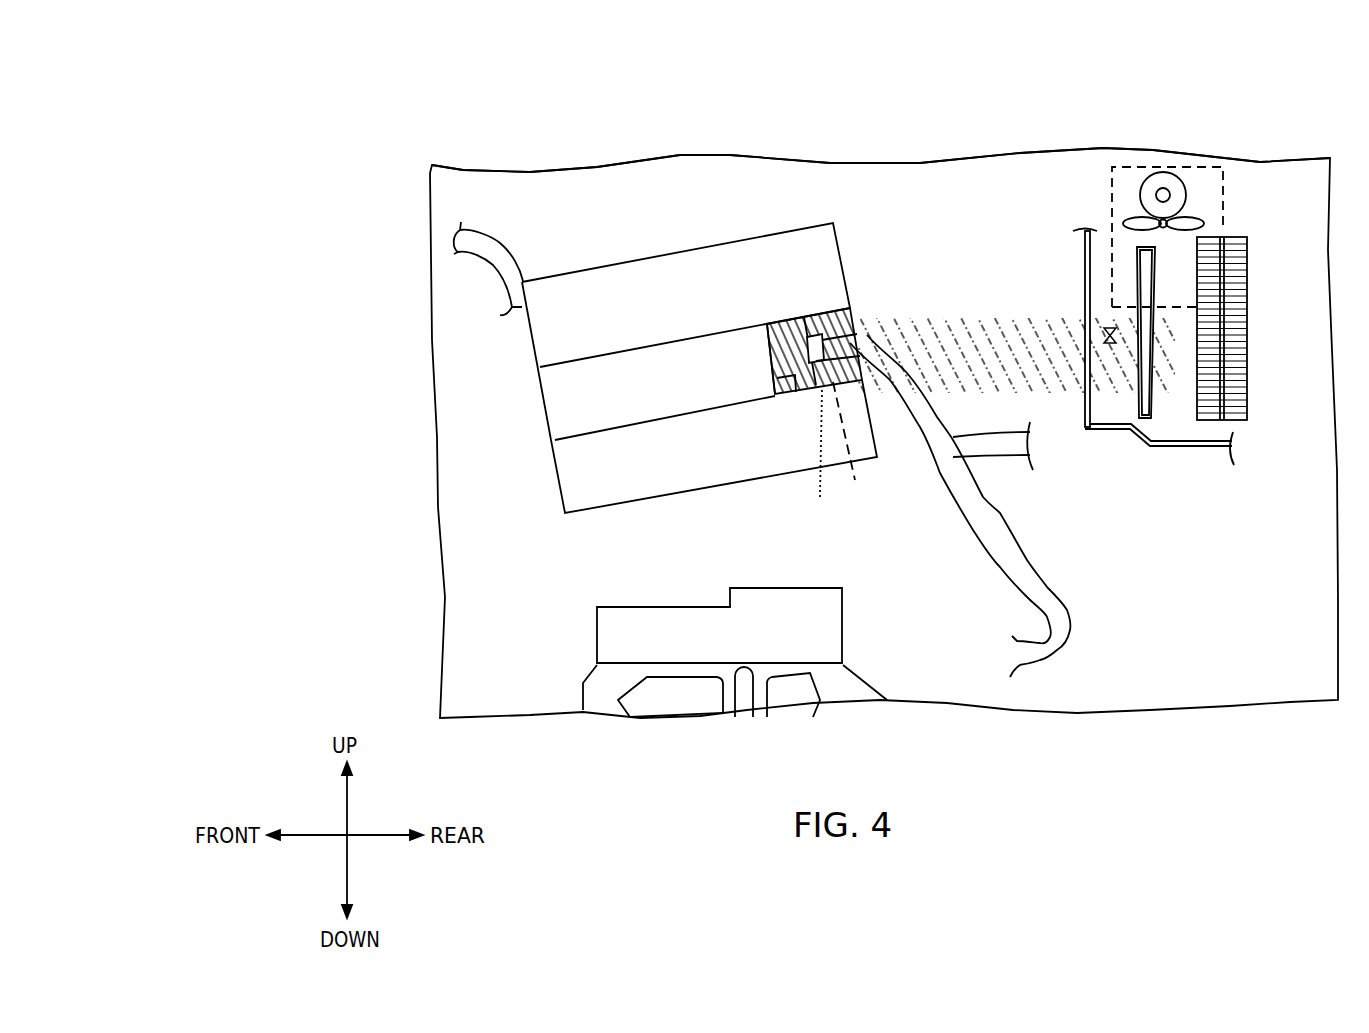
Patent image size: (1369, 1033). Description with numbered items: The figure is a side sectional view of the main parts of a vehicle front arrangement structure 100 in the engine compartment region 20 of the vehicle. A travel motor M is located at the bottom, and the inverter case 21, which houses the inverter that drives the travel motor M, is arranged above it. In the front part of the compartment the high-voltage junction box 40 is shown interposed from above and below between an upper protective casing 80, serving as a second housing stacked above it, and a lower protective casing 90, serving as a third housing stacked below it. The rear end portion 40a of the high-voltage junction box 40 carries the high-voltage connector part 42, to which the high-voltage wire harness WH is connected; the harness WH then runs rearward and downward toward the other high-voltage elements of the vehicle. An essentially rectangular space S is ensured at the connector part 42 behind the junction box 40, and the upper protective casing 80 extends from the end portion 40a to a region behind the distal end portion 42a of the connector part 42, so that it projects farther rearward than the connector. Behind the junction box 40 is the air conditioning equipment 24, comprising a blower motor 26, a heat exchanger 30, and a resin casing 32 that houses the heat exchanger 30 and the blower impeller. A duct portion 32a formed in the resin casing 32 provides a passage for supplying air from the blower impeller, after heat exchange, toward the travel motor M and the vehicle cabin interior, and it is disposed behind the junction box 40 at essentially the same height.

The vehicle front arrangement structure 100 is at (1163, 120).
The motor room (front compartment) 20 is at (878, 204).
The inverter case 21 is at (843, 622).
The air conditioning equipment 24 is at (1123, 448).
The blower motor 26 is at (1223, 195).
The heat exchanger 30 is at (1247, 250).
The resin casing 32 is at (1082, 263).
The duct portion 32a is at (1118, 404).
The high-voltage junction box 40 is at (647, 423).
The end portion 40a is at (783, 397).
The high-voltage connector part 42 is at (791, 390).
The distal end portion 42a is at (823, 456).
The upper protective casing 80 is at (526, 328).
The lower protective casing 90 is at (558, 476).
The space S is at (848, 446).
The high-voltage wire harness WH is at (850, 313).
The travel motor M is at (733, 708).